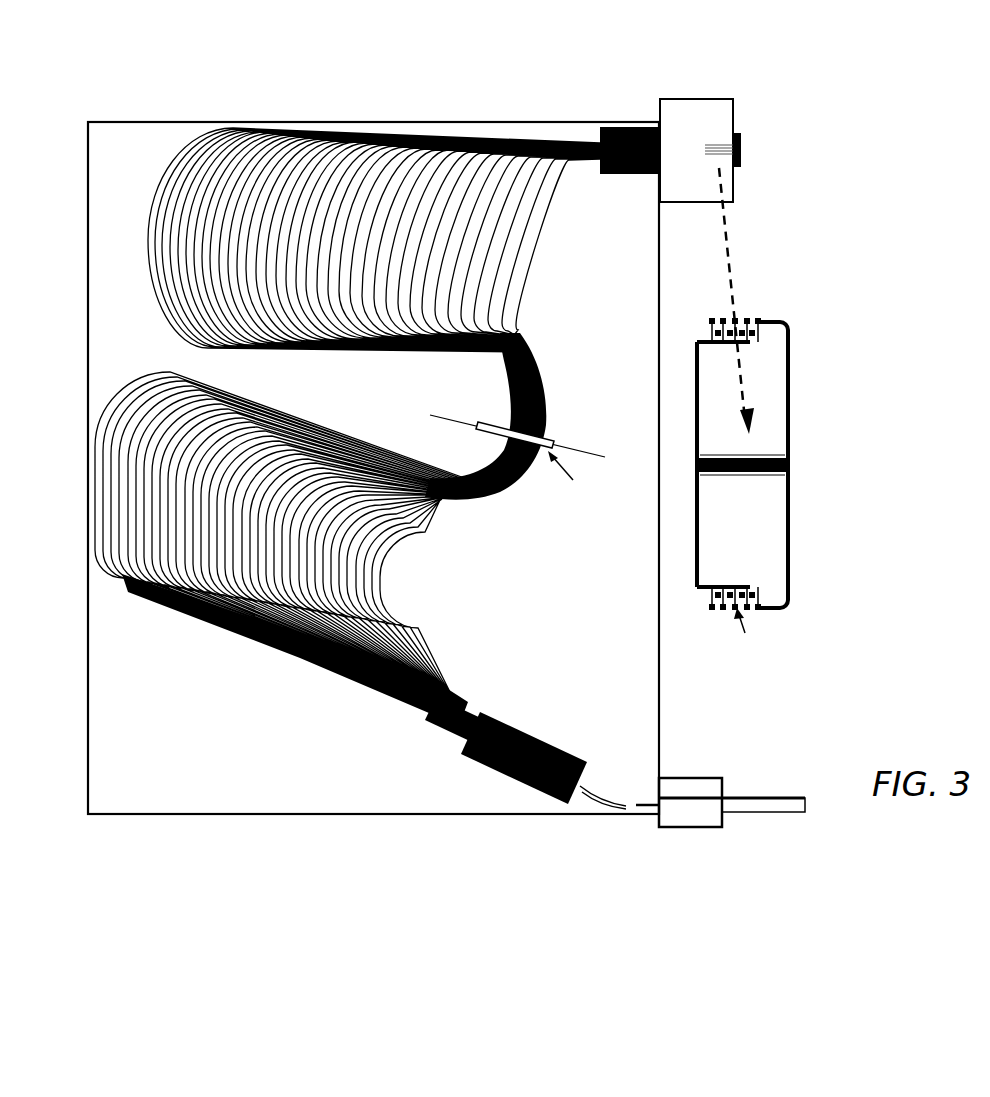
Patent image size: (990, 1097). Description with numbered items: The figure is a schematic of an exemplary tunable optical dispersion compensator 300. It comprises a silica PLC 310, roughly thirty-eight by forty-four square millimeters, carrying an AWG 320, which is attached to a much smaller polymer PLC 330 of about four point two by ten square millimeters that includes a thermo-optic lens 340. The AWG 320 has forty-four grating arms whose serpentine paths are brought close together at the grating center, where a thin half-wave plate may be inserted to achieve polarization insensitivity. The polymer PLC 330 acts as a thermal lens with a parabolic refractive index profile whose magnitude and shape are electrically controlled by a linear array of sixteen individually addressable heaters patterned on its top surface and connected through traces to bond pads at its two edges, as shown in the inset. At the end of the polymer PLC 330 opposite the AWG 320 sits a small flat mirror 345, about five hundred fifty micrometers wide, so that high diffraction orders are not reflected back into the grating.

The tunable optical dispersion compensator 300 is at (961, 33).
The silica PLC 310 is at (163, 812).
The AWG 320 is at (338, 680).
The polymer PLC 330 is at (689, 98).
The thermo-optic lens 340 is at (719, 147).
The flat mirror 345 is at (740, 159).